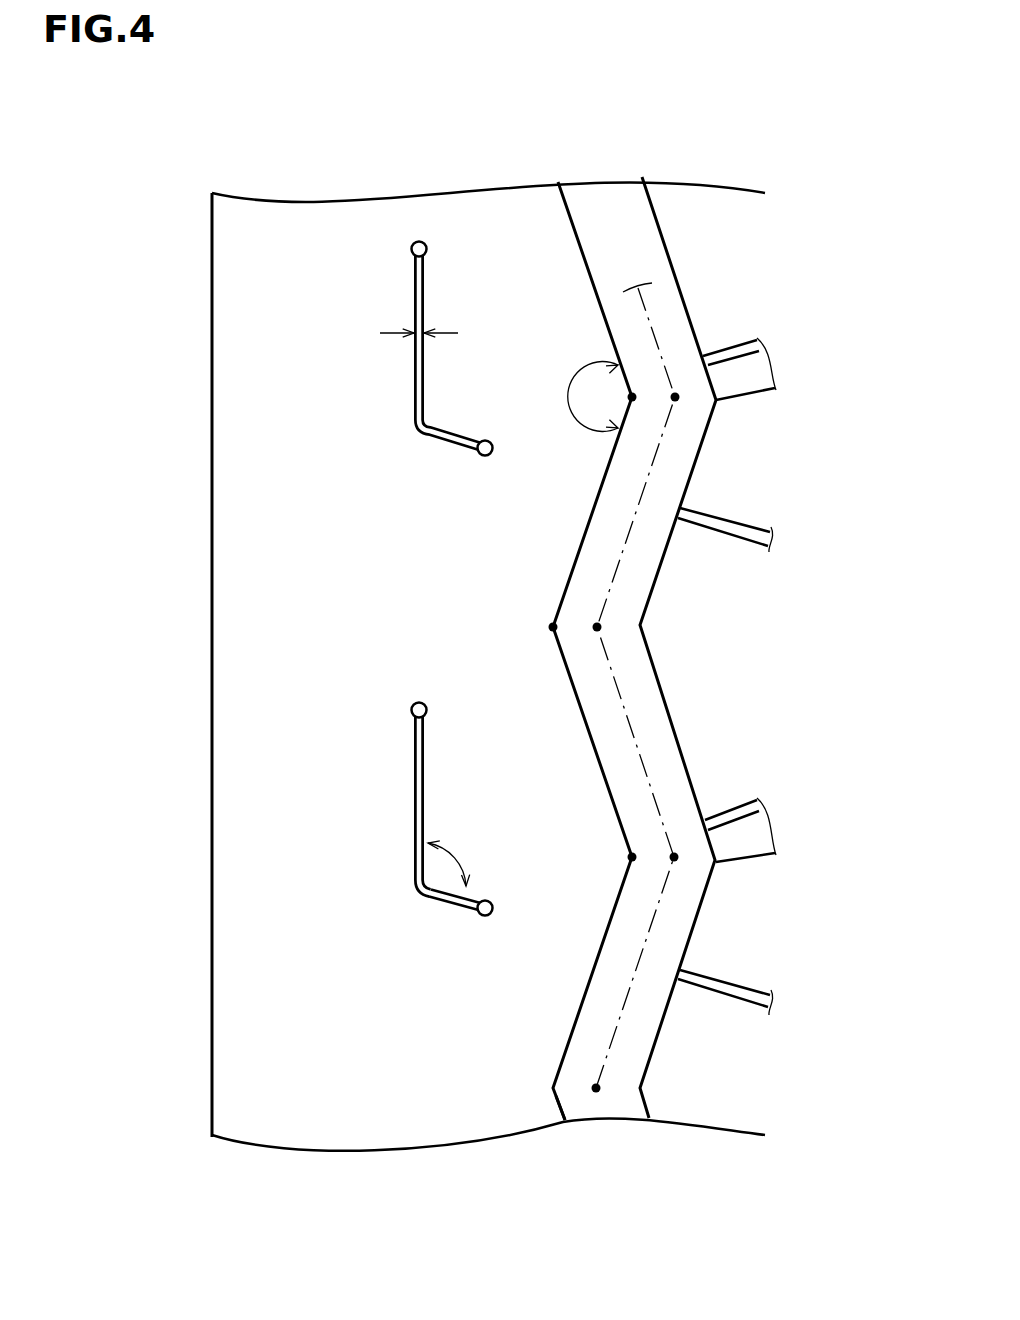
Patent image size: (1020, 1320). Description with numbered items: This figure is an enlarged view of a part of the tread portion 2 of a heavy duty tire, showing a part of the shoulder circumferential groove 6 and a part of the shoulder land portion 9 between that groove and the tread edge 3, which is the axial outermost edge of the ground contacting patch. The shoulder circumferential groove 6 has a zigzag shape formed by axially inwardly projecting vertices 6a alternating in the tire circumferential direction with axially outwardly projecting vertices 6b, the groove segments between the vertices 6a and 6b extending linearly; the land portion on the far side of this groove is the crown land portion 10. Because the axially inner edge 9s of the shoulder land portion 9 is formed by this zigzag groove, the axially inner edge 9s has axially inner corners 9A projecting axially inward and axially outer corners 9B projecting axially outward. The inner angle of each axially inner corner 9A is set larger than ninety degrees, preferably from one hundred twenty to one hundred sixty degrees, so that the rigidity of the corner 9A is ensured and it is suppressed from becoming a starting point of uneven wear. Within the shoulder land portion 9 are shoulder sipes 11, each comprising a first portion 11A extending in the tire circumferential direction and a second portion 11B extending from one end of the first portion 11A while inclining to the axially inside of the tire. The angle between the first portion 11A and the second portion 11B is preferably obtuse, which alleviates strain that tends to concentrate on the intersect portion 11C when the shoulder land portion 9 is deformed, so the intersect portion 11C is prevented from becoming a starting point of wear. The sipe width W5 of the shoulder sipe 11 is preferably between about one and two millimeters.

The tread portion 2 is at (265, 325).
The tread edge 3 is at (212, 234).
The shoulder land portion 9 is at (315, 248).
The axially inner corner 9A is at (632, 397).
The axially outer corner 9B is at (553, 627).
The axially inner edge 9s is at (562, 1105).
The shoulder circumferential groove 6 is at (609, 213).
The axially inwardly projecting vertex 6a is at (675, 397).
The axially outwardly projecting vertex 6b is at (597, 627).
The crown land portion 10 is at (702, 218).
The shoulder sipe 11 is at (265, 618).
The first portion 11A is at (417, 797).
The second portion 11B is at (455, 907).
The intersect portion 11C is at (418, 890).
The sipe width W5 is at (417, 340).